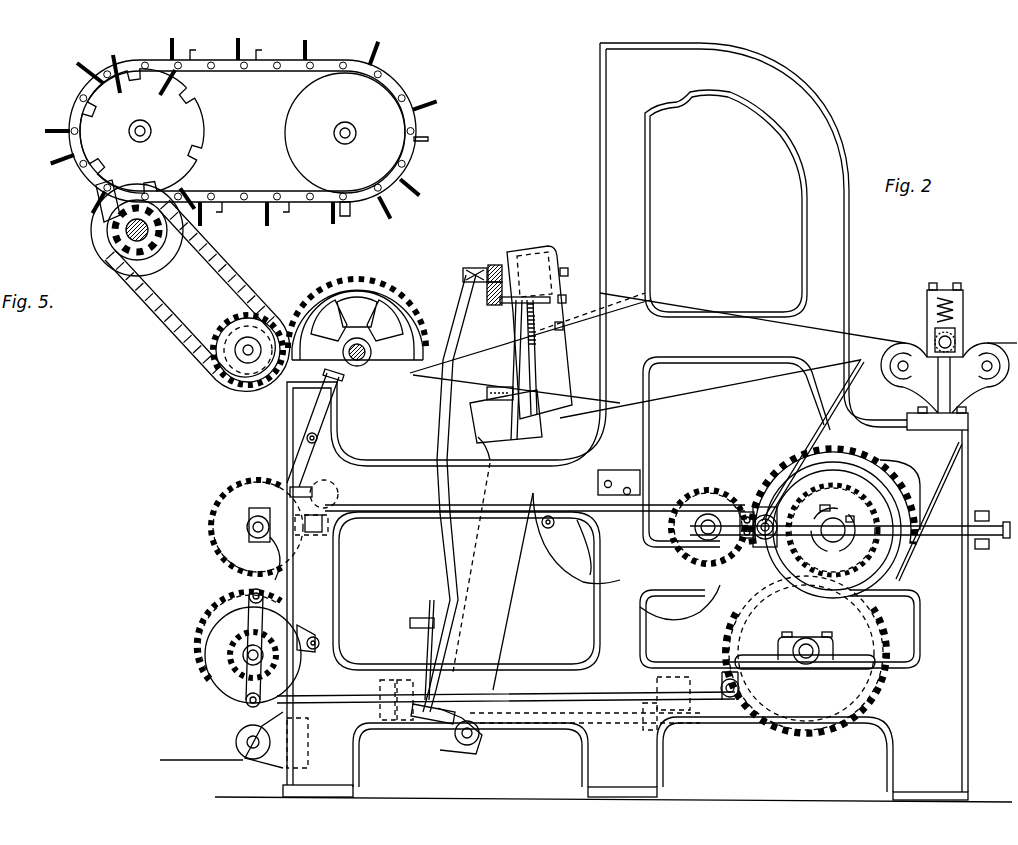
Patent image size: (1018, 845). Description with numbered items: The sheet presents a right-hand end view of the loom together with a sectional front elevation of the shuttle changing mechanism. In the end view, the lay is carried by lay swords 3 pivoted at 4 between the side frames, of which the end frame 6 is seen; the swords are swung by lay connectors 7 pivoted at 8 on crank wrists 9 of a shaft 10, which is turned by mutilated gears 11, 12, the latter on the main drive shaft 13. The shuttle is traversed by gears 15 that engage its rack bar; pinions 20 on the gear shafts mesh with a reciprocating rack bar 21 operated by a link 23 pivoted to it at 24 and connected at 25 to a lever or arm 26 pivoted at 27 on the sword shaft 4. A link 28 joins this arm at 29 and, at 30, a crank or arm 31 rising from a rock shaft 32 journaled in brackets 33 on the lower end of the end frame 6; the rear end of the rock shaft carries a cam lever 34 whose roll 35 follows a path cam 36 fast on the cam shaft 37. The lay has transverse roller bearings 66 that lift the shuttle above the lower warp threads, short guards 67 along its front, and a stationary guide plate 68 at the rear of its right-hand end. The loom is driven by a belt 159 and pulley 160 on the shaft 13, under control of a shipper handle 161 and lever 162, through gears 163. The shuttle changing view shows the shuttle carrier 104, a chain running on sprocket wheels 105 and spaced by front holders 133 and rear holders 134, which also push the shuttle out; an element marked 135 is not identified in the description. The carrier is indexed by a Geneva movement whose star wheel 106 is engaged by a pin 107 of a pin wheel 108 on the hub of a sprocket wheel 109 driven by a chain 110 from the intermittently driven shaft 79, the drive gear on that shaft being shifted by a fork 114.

In FIG. 2, the lay swords 3 is at (518, 640).
In FIG. 2, the pivot shaft 4 is at (480, 736).
In FIG. 2, the side frame 6 is at (606, 133).
In FIG. 2, the lay connectors 7 is at (578, 593).
In FIG. 2, the pivot 8 is at (748, 547).
In FIG. 2, the crank wrists 9 is at (733, 512).
In FIG. 2, the shaft 10 is at (702, 536).
In FIG. 2, the mutilated gear 11 is at (715, 487).
In FIG. 2, the mutilated gear 12 is at (785, 455).
In FIG. 2, the main drive shaft 13 is at (850, 528).
In FIG. 2, the gears 15 is at (520, 333).
In FIG. 2, the toothed pinions 20 is at (495, 290).
In FIG. 2, the reciprocating rack bar 21 is at (488, 267).
In FIG. 2, the link 23 is at (466, 278).
In FIG. 2, the pivot 24 is at (485, 268).
In FIG. 2, the pivotal connection 25 is at (475, 282).
In FIG. 2, the lever or arm 26 is at (446, 532).
In FIG. 2, the pivot 27 is at (407, 724).
In FIG. 2, the link 28 is at (420, 622).
In FIG. 2, the pivotal connection 29 is at (418, 591).
In FIG. 2, the pivotal connection 30 is at (408, 623).
In FIG. 2, the crank or arm 31 is at (418, 649).
In FIG. 2, the rock shaft 32 is at (605, 724).
In FIG. 2, the bearings or brackets 33 is at (378, 690).
In FIG. 2, the cam lever 34 is at (724, 680).
In FIG. 2, the roll 35 is at (790, 616).
In FIG. 2, the path cam 36 is at (878, 640).
In FIG. 2, the cam shaft 37 is at (360, 356).
In FIG. 2, the transverse roller bearings 66 is at (522, 390).
In FIG. 2, the guides or guards 67 is at (456, 372).
In FIG. 2, the stationary guide plate 68 is at (522, 373).
In FIG. 2, the shaft 79 is at (248, 378).
In FIG. 5, the shuttle carrier 104 is at (303, 62).
In FIG. 2, the shuttle carrier 104 is at (697, 613).
In FIG. 5, the sprocket wheels 105 is at (197, 90).
In FIG. 5, the star wheel 106 is at (82, 90).
In FIG. 5, the pin 107 is at (100, 192).
In FIG. 5, the pin wheel 108 is at (92, 242).
In FIG. 5, the sprocket wheel 109 is at (145, 262).
In FIG. 5, the chain 110 is at (160, 292).
In FIG. 5, the fork 114 is at (283, 322).
In FIG. 5, the front holders 133 is at (380, 205).
In FIG. 5, the rear holders 134 is at (417, 193).
In FIG. 5, the finger 135 is at (392, 200).
In FIG. 2, the belt 159 is at (955, 467).
In FIG. 2, the pulley 160 is at (883, 460).
In FIG. 2, the shipper handle 161 is at (343, 399).
In FIG. 2, the lever 162 is at (372, 505).
In FIG. 2, the gears 163 is at (863, 560).